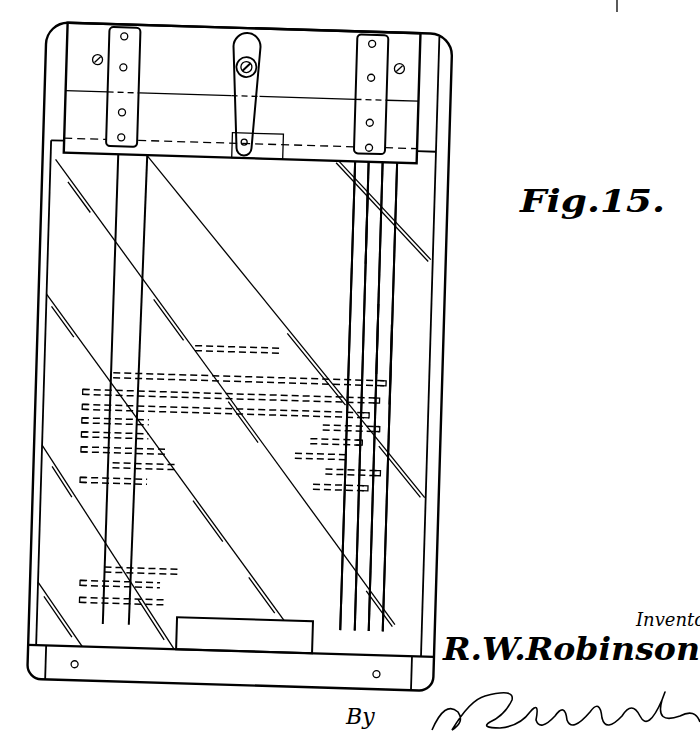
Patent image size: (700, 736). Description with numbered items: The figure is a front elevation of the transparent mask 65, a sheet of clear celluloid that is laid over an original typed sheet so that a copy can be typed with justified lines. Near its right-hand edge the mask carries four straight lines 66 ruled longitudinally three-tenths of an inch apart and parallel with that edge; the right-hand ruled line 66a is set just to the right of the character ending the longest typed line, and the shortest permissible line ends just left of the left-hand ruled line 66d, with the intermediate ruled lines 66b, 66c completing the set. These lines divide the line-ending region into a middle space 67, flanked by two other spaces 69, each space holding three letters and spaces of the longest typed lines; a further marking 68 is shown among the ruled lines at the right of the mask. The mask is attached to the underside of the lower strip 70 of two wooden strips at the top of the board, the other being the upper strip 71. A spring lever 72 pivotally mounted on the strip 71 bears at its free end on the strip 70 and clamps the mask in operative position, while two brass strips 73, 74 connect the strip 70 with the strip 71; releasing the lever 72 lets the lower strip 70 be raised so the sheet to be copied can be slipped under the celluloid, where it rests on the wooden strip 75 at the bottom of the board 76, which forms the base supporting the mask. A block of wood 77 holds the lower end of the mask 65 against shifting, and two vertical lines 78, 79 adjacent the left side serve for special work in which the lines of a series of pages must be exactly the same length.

The transparent mask 65 is at (235, 404).
The straight lines 66 is at (349, 396).
The right-hand ruled line 66a is at (497, 174).
The ruled line 66b is at (503, 227).
The ruled line 66c is at (505, 254).
The left-hand ruled line 66d is at (342, 309).
The middle space 67 is at (428, 333).
The slot between strips 68 is at (343, 229).
The space 69 is at (433, 364).
The lower strip 70 is at (241, 143).
The strip 71 is at (242, 93).
The spring lever 72 is at (223, 94).
The strip of brass 73 is at (140, 87).
The strip of brass 74 is at (347, 94).
The strip of wood 75 is at (230, 685).
The board 76 is at (259, 356).
The block of wood 77 is at (244, 615).
The vertical line 78 is at (95, 389).
The vertical line 79 is at (159, 390).